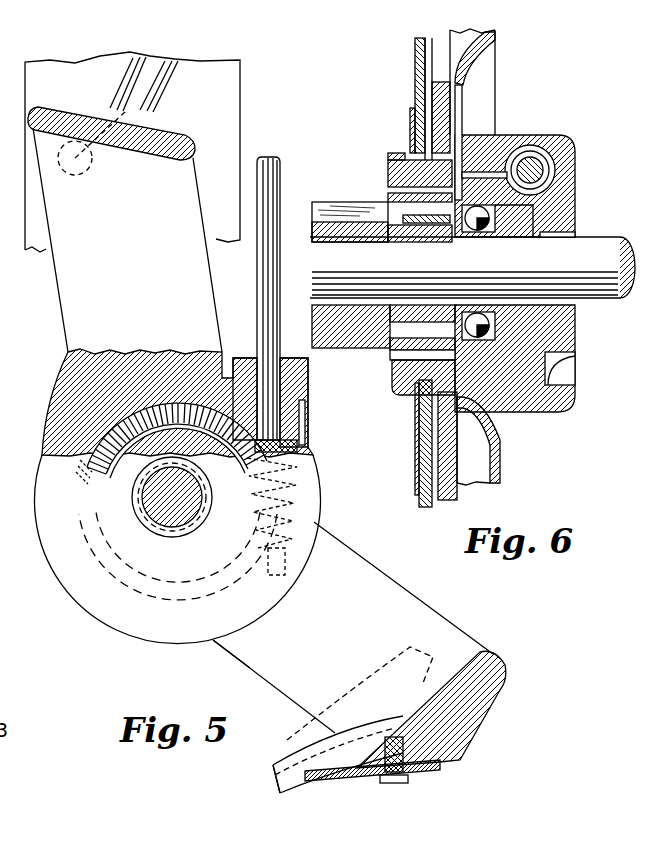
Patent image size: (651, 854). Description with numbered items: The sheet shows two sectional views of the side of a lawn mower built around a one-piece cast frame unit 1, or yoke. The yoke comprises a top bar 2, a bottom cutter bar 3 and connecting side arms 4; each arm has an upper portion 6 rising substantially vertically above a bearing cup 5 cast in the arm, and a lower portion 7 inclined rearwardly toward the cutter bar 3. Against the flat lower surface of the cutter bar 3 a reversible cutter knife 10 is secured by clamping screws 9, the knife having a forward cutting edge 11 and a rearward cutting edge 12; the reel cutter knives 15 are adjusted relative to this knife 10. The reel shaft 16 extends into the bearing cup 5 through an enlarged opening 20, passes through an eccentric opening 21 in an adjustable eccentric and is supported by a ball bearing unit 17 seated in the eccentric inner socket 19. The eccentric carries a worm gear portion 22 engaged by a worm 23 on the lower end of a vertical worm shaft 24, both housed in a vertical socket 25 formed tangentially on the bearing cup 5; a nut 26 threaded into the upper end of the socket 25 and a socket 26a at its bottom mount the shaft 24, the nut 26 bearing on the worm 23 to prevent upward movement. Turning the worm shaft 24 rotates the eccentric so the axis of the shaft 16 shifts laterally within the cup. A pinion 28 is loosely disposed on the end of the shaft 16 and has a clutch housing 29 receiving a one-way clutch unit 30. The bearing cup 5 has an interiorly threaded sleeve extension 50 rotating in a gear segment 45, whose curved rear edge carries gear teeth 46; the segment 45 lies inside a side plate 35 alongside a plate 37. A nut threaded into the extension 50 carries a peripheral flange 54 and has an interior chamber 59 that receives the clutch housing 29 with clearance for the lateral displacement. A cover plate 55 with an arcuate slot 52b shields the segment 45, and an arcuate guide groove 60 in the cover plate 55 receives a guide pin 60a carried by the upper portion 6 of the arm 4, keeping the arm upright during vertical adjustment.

In FIG. 5, the frame unit 1 is at (202, 129).
In FIG. 5, the top bar 2 is at (165, 133).
In FIG. 5, the bottom cutter bar 3 is at (447, 720).
In FIG. 5, the connecting side arms 4 is at (250, 672).
In FIG. 5, the bearing cup 5 is at (52, 475).
In FIG. 6, the bearing cup 5 is at (520, 134).
In FIG. 5, the upper portion 6 is at (63, 278).
In FIG. 5, the lower portion 7 is at (248, 643).
In FIG. 5, the clamping screws 9 is at (390, 778).
In FIG. 5, the cutter knife 10 is at (345, 773).
In FIG. 5, the forward cutting edge 11 is at (300, 762).
In FIG. 5, the rearward cutting edge 12 is at (440, 767).
In FIG. 5, the reel cutter knives 15 is at (273, 778).
In FIG. 5, the shaft 16 is at (167, 503).
In FIG. 6, the shaft 16 is at (602, 275).
In FIG. 6, the ball bearing units 17 is at (481, 225).
In FIG. 6, the inner socket 19 is at (566, 207).
In FIG. 5, the enlarged opening 20 is at (143, 477).
In FIG. 6, the enlarged opening 20 is at (565, 234).
In FIG. 6, the opening 21 is at (514, 230).
In FIG. 5, the worm gear portion 22 is at (150, 424).
In FIG. 6, the worm gear portion 22 is at (548, 356).
In FIG. 5, the worm 23 is at (300, 477).
In FIG. 6, the worm 23 is at (552, 170).
In FIG. 5, the worm shaft 24 is at (270, 293).
In FIG. 6, the worm shaft 24 is at (566, 182).
In FIG. 5, the vertical socket 25 is at (306, 430).
In FIG. 6, the vertical socket 25 is at (556, 152).
In FIG. 5, the nut 26 is at (240, 358).
In FIG. 5, the socket 26a is at (287, 552).
In FIG. 6, the pinion 28 is at (328, 217).
In FIG. 6, the clutch housing 29 is at (392, 351).
In FIG. 6, the clutch unit 30 is at (390, 193).
In FIG. 6, the side plate 35 is at (416, 50).
In FIG. 6, the plate 37 is at (412, 122).
In FIG. 6, the gear segment 45 is at (443, 93).
In FIG. 6, the gear teeth 46 is at (434, 82).
In FIG. 6, the sleeve extension 50 is at (388, 168).
In FIG. 6, the arcuate slot 52b is at (458, 104).
In FIG. 6, the peripheral flange 54 is at (392, 156).
In FIG. 5, the cover plate 55 is at (40, 82).
In FIG. 6, the cover plate 55 is at (493, 50).
In FIG. 6, the interior chamber 59 is at (397, 364).
In FIG. 5, the arcuate guide groove 60 is at (133, 100).
In FIG. 5, the guide pin 60a is at (78, 175).